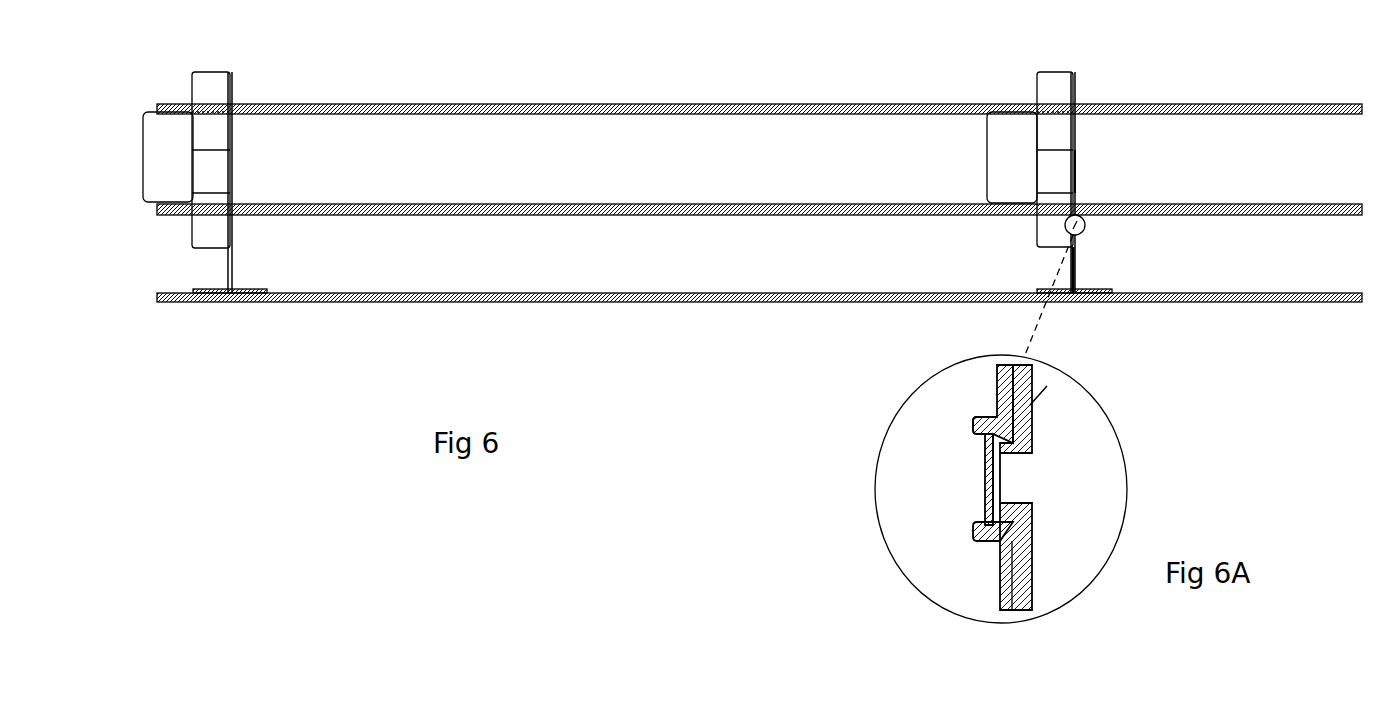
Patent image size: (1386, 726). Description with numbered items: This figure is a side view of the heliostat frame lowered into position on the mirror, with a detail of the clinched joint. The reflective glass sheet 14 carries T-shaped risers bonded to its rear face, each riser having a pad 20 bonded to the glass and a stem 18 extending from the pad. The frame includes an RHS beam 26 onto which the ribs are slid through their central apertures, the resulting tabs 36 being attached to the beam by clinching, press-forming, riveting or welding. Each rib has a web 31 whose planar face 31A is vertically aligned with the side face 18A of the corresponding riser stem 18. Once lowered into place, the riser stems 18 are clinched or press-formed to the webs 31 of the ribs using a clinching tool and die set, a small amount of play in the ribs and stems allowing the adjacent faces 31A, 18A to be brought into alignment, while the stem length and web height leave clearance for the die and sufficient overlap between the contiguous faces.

In FIG. 6, the reflective glass sheet 14 is at (700, 303).
In FIG. 6, the stem 18 is at (1074, 265).
In FIG. 6A, the stem 18 is at (1003, 605).
In FIG. 6A, the side face of the riser stem 18A is at (1033, 600).
In FIG. 6, the pad 20 is at (1095, 303).
In FIG. 6, the RHS beam 26 is at (703, 105).
In FIG. 6, the web 31 is at (1072, 70).
In FIG. 6, the planar face of the web 31A is at (1074, 166).
In FIG. 6A, the planar face of the web 31A is at (1010, 545).
In FIG. 6, the tab 36 is at (1009, 140).